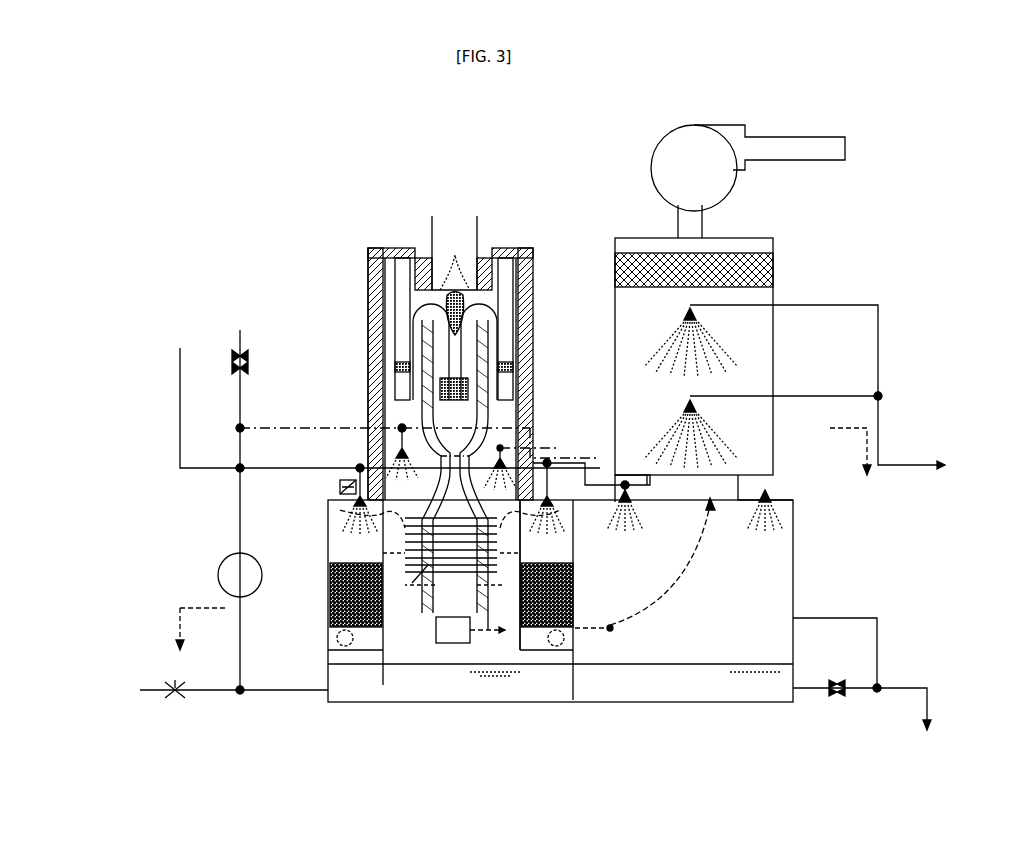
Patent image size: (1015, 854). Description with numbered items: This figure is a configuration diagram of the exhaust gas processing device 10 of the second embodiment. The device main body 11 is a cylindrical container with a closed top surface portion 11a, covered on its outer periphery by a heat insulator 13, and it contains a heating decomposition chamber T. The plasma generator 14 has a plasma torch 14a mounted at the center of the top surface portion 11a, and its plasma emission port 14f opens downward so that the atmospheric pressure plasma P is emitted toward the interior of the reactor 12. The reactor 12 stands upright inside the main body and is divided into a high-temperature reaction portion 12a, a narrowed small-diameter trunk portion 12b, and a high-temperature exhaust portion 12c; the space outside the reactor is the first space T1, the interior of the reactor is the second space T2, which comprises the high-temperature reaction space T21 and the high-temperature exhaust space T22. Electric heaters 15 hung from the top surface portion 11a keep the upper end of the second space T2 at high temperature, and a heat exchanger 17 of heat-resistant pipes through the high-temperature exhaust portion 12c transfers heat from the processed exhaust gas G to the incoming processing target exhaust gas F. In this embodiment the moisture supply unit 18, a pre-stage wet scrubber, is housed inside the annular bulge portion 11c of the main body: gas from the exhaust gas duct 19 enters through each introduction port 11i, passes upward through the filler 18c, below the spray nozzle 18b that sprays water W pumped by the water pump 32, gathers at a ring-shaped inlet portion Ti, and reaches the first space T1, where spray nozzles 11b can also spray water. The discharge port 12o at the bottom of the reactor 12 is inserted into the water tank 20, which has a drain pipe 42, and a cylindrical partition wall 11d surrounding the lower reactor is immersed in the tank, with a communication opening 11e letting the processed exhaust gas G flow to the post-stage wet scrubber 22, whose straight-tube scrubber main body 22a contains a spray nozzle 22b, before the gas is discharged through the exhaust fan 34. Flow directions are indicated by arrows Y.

The exhaust gas processing device 10 is at (364, 205).
The device main body 11 is at (537, 408).
The top surface portion 11a is at (505, 248).
The spray nozzles 11b is at (398, 450).
The annular bulge portion 11c is at (330, 588).
The partition wall 11d is at (520, 655).
The communication opening 11e is at (488, 645).
The introduction port 11i is at (612, 437).
The reactor 12 is at (462, 338).
The high-temperature reaction portion 12a is at (470, 352).
The small-diameter trunk portion 12b is at (468, 445).
The high-temperature exhaust portion 12c is at (488, 586).
The discharge port 12o is at (440, 643).
The heat insulator 13 is at (369, 352).
The plasma generator 14 is at (458, 233).
The plasma torch 14a is at (450, 235).
The plasma emission port 14f is at (440, 280).
The electric heaters 15 is at (396, 305).
The heat exchanger 17 is at (418, 583).
The moisture supply unit 18 is at (580, 580).
The spray nozzle 18b is at (340, 515).
The filler 18c is at (330, 620).
The exhaust gas duct 19 is at (166, 442).
The water tank 20 is at (368, 720).
The post-stage wet scrubber 22 is at (800, 358).
The scrubber main body 22a is at (773, 460).
The spray nozzle 22b is at (698, 318).
The water pump 32 is at (218, 575).
The exhaust fan 34 is at (695, 118).
The drain pipe 42 is at (830, 618).
The heating decomposition chamber T is at (482, 303).
The first space T1 is at (398, 412).
The second space T2 is at (480, 398).
The high-temperature reaction space T21 is at (478, 372).
The high-temperature exhaust space T22 is at (445, 643).
The inlet portion Ti is at (338, 490).
The atmospheric pressure plasma P is at (465, 322).
The processing target exhaust gas F is at (395, 540).
The processed exhaust gas G is at (654, 564).
The water W is at (650, 688).
The flow direction Y is at (523, 539).